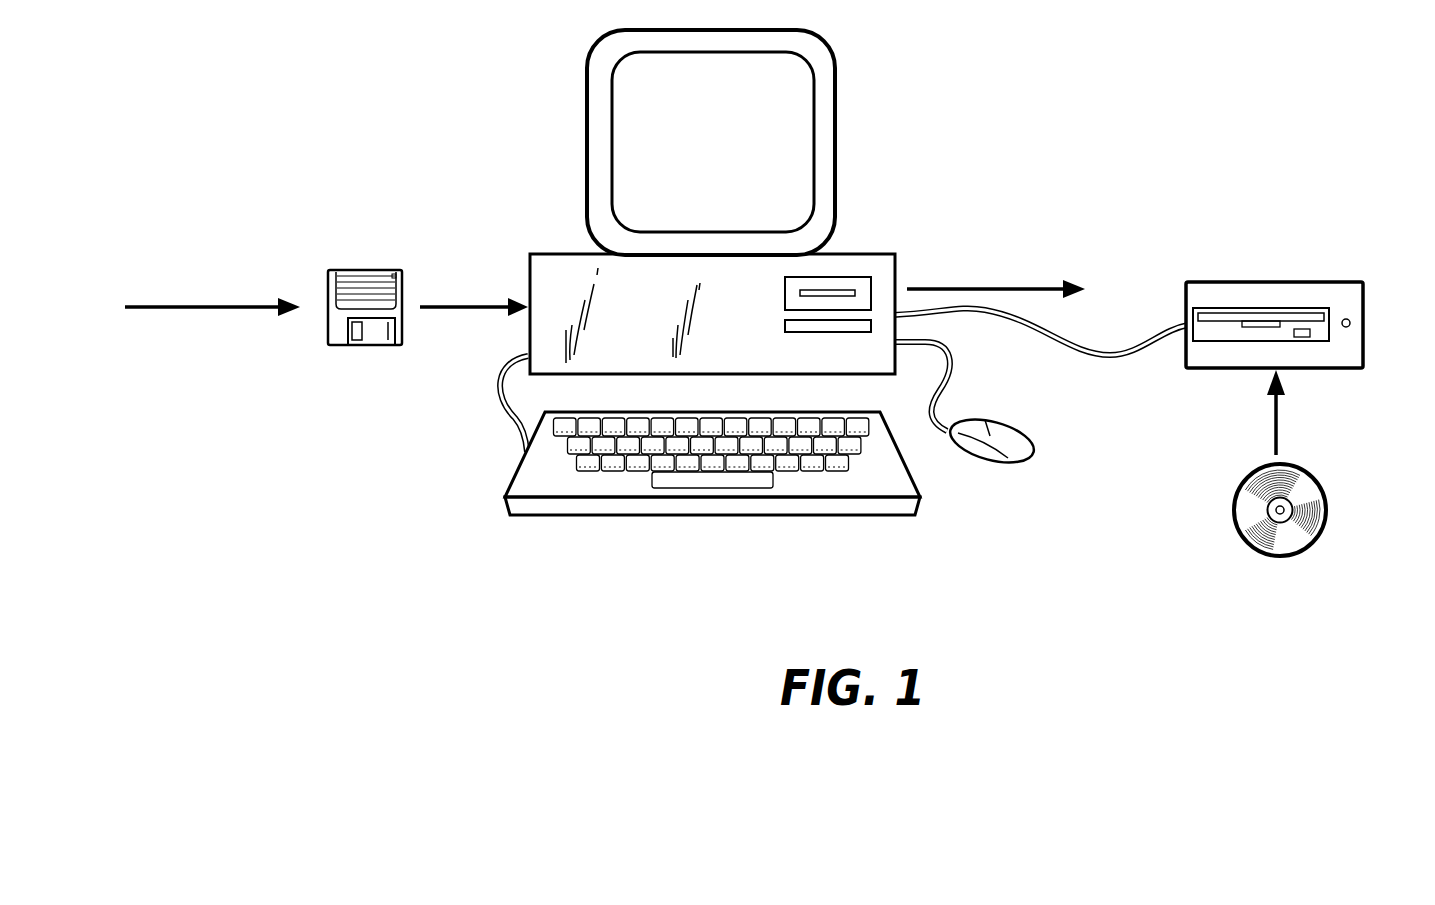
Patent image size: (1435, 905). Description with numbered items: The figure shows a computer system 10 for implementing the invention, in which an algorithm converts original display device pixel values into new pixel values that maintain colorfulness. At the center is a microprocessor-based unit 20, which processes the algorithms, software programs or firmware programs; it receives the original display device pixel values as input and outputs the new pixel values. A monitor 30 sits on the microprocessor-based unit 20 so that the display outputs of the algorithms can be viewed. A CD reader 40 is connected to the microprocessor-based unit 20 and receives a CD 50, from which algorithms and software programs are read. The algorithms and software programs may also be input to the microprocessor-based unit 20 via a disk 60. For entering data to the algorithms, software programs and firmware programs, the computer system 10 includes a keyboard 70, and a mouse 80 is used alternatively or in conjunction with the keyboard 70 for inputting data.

The computer system 10 is at (466, 40).
The microprocessor-based unit 20 is at (562, 254).
The monitor 30 is at (838, 97).
The CD reader 40 is at (1365, 318).
The CD 50 is at (1271, 556).
The disk 60 is at (367, 270).
The keyboard 70 is at (617, 517).
The mouse 80 is at (975, 449).